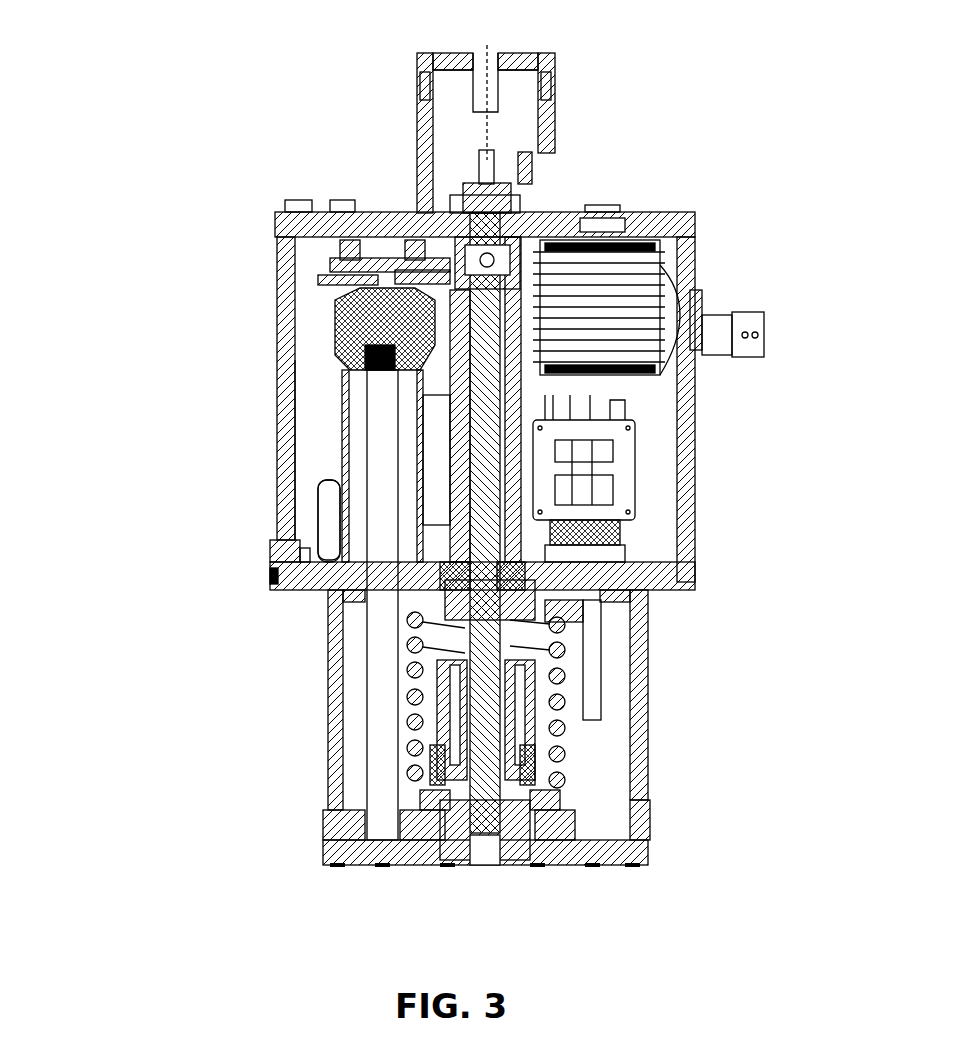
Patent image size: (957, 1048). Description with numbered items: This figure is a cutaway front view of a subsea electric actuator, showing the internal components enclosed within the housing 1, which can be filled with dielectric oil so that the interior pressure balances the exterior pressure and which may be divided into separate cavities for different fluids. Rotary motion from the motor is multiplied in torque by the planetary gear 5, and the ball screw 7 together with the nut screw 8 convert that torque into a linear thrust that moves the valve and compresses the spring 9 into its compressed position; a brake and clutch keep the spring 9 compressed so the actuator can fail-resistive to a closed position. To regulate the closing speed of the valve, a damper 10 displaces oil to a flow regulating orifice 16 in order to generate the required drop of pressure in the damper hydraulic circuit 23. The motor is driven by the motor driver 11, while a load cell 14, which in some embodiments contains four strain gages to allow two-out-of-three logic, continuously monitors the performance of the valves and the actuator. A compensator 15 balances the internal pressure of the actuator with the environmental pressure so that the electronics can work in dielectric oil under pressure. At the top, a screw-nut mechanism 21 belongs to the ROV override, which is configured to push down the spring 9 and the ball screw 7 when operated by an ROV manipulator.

The housing 1 is at (638, 800).
The planetary gear 5 is at (335, 322).
The ball screw 7 is at (405, 680).
The nut screw 8 is at (420, 740).
The spring 9 is at (405, 625).
The damper 10 is at (590, 665).
The motor driver 11 is at (630, 470).
The load cell 14 is at (432, 575).
The compensator 15 is at (640, 282).
The flow regulating orifice 16 is at (272, 576).
The screw-nut mechanism 21 is at (490, 340).
The damper hydraulic circuit 23 is at (322, 495).